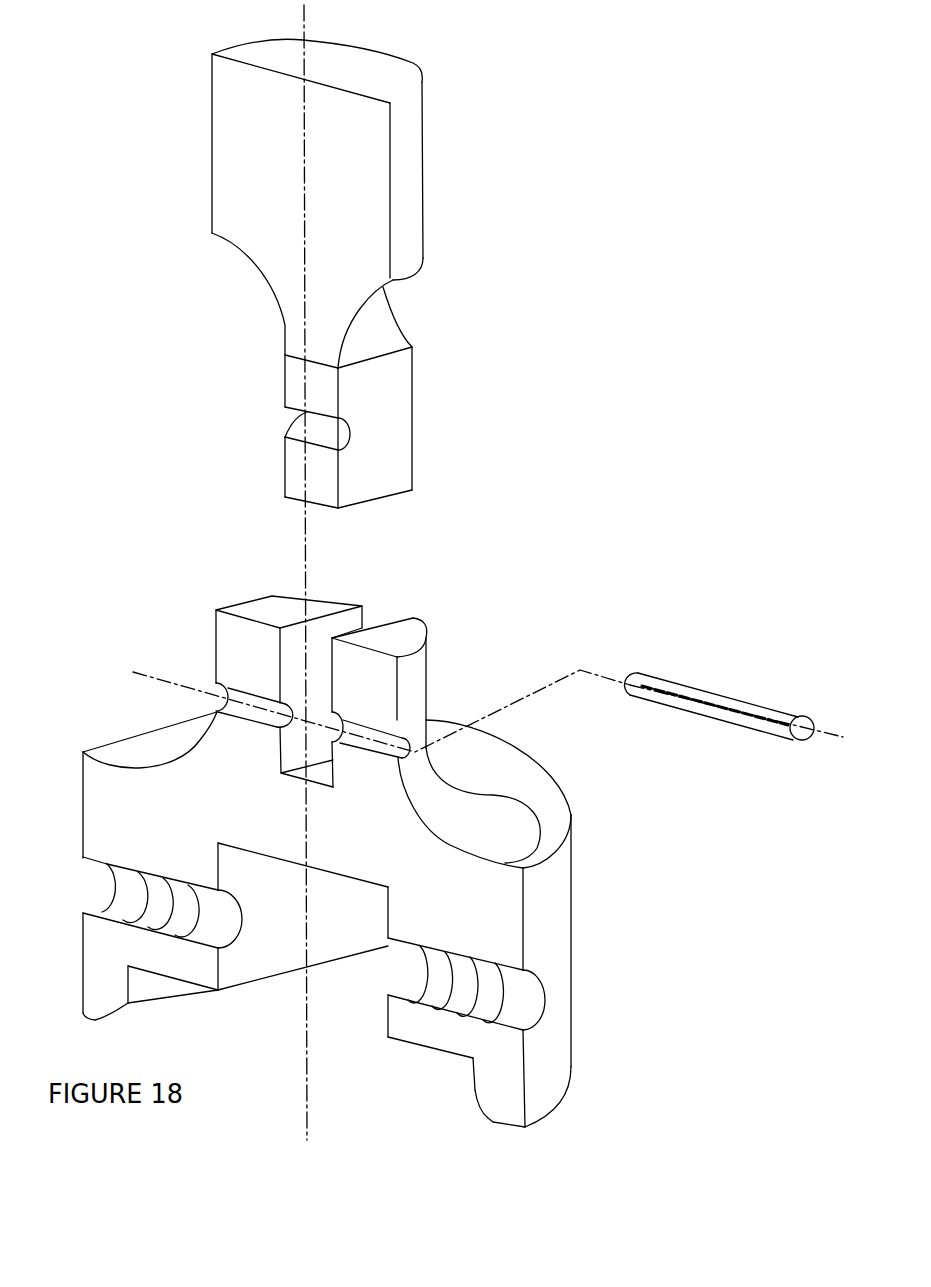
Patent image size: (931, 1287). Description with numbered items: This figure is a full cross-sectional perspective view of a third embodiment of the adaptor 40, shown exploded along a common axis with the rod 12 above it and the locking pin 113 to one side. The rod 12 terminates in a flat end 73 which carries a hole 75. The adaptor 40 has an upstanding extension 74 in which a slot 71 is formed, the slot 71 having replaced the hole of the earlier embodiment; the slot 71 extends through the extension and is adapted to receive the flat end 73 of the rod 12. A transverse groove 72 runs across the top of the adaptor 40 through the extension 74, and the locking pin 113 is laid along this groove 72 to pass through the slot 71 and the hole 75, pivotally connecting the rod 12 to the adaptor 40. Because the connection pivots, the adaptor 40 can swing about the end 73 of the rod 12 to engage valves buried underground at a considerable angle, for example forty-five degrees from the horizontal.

The rod 12 is at (371, 203).
The flat end 73 is at (276, 415).
The hole 75 is at (404, 420).
The slot 71 is at (316, 658).
The extension 74 is at (450, 695).
The groove 72 is at (210, 683).
The locking pin 113 is at (733, 686).
The adaptor 40 is at (405, 919).